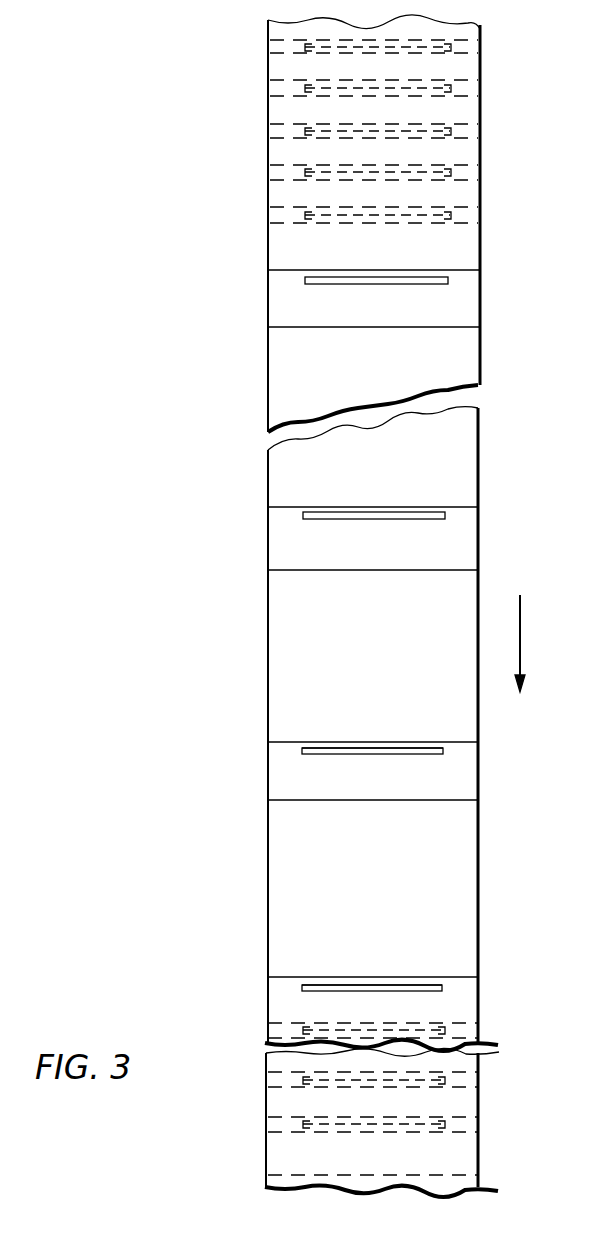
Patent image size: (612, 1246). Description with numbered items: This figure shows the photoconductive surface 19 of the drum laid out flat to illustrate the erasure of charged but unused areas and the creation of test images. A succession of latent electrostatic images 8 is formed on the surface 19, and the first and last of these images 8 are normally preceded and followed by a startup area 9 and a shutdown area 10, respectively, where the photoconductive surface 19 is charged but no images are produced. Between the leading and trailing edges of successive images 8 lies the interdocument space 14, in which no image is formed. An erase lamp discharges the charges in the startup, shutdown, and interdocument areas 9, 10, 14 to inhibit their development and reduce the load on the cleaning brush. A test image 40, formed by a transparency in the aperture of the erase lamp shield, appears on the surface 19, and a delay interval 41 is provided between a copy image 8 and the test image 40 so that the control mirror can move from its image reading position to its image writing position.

The latent electrostatic image 8 is at (458, 658).
The startup stage 9 is at (490, 1187).
The shutdown stage 10 is at (495, 35).
The interdocument space 14 is at (437, 783).
The photoconductive surface 19 is at (252, 648).
The test image 40 is at (302, 284).
The delay interval 41 is at (408, 715).